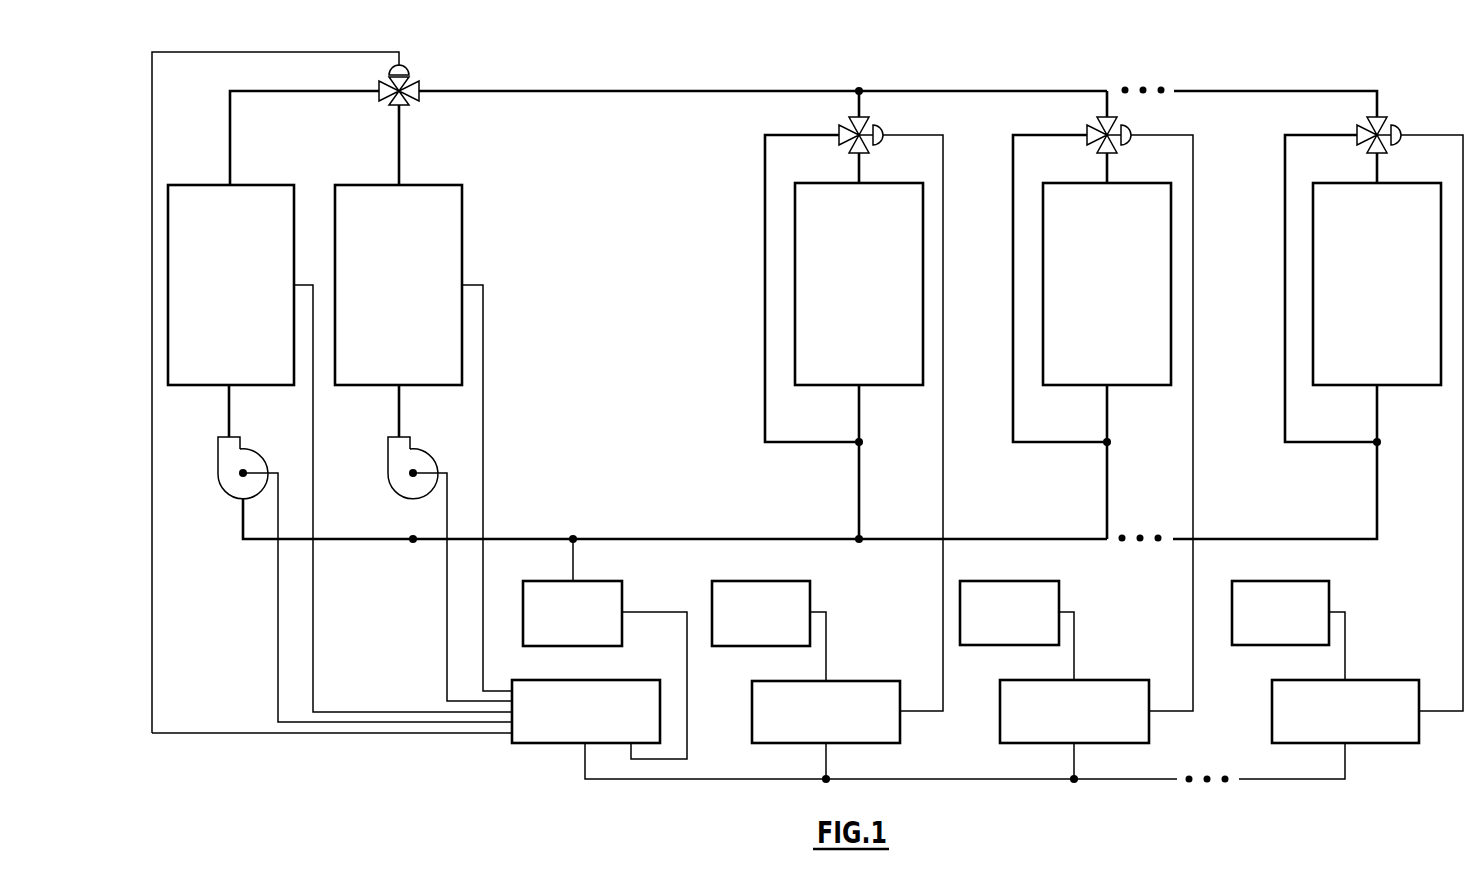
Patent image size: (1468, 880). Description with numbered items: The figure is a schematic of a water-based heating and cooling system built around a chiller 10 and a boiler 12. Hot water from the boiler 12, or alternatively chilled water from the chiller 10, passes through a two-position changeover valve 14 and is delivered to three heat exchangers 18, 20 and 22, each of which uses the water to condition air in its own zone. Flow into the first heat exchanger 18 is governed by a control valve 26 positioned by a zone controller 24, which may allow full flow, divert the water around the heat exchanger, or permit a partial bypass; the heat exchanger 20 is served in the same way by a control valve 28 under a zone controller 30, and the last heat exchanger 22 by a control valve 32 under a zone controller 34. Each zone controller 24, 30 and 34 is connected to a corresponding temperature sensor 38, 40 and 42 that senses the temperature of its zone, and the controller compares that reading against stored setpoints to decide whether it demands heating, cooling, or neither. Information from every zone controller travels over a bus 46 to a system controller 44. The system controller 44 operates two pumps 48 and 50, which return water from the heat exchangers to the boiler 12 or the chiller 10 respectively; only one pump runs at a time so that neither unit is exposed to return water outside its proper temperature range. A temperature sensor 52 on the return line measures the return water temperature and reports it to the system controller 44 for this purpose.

The chiller 10 is at (258, 183).
The boiler 12 is at (428, 183).
The two-position changeover valve 14 is at (417, 82).
The heat exchanger 18 is at (875, 183).
The heat exchanger 20 is at (1123, 183).
The heat exchanger 22 is at (1395, 183).
The zone controller 24 is at (862, 681).
The control valve 26 is at (863, 132).
The control valve 28 is at (1114, 130).
The zone controller 30 is at (1110, 680).
The control valve 32 is at (1384, 130).
The zone controller 34 is at (1380, 680).
The temperature sensor 38 is at (812, 595).
The temperature sensor 40 is at (1061, 595).
The temperature sensor 42 is at (1331, 595).
The system controller 44 is at (607, 680).
The bus 46 is at (945, 779).
The pump 48 is at (413, 448).
The pump 50 is at (247, 450).
The temperature sensor 52 is at (624, 595).